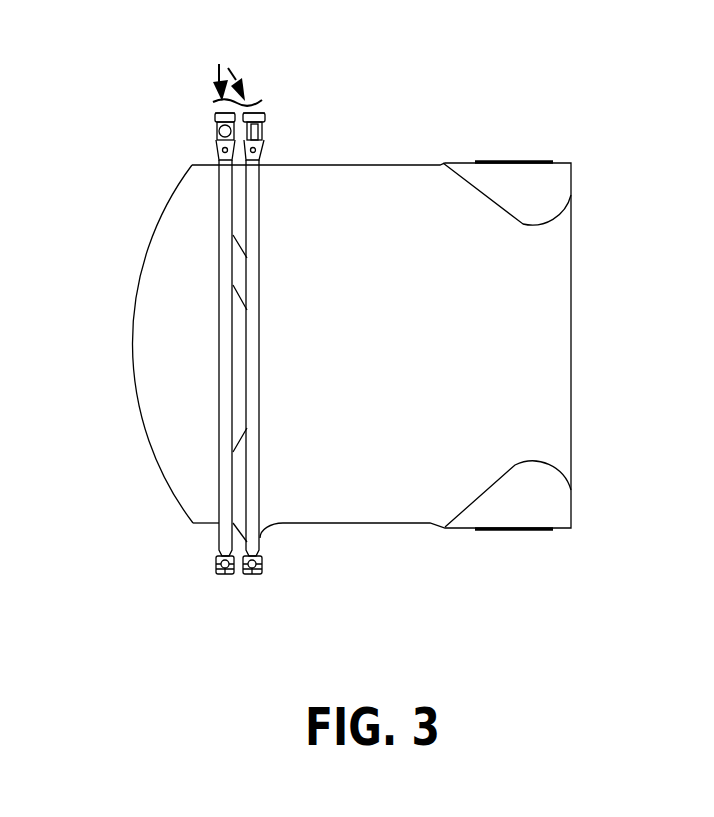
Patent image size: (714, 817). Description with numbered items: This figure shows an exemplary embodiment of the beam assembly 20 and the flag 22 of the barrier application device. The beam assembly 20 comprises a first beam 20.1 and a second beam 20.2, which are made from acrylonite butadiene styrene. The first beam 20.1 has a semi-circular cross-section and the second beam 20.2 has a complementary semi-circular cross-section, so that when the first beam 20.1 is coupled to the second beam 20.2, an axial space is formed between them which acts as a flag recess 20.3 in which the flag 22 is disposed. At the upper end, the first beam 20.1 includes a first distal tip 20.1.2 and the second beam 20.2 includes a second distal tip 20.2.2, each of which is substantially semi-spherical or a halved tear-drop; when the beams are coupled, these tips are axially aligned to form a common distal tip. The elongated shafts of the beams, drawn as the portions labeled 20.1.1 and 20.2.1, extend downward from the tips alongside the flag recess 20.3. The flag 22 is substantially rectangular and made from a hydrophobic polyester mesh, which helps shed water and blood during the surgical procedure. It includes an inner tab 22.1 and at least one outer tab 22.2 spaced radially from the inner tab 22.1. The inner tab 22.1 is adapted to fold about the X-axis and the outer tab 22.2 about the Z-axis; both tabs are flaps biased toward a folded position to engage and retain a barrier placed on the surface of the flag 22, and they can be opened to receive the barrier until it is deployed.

The beam assembly 20 is at (106, 260).
The first beam 20.1 is at (255, 90).
The first contact shaft 20.1.1 is at (232, 193).
The first distal tip 20.1.2 is at (215, 113).
The second beam 20.2 is at (267, 132).
The second contact shaft 20.2.1 is at (245, 195).
The second distal tip 20.2.2 is at (263, 110).
The flag recess 20.3 is at (233, 332).
The flag 22 is at (420, 187).
The inner tab 22.1 is at (152, 312).
The outer tab 22.2 is at (535, 185).